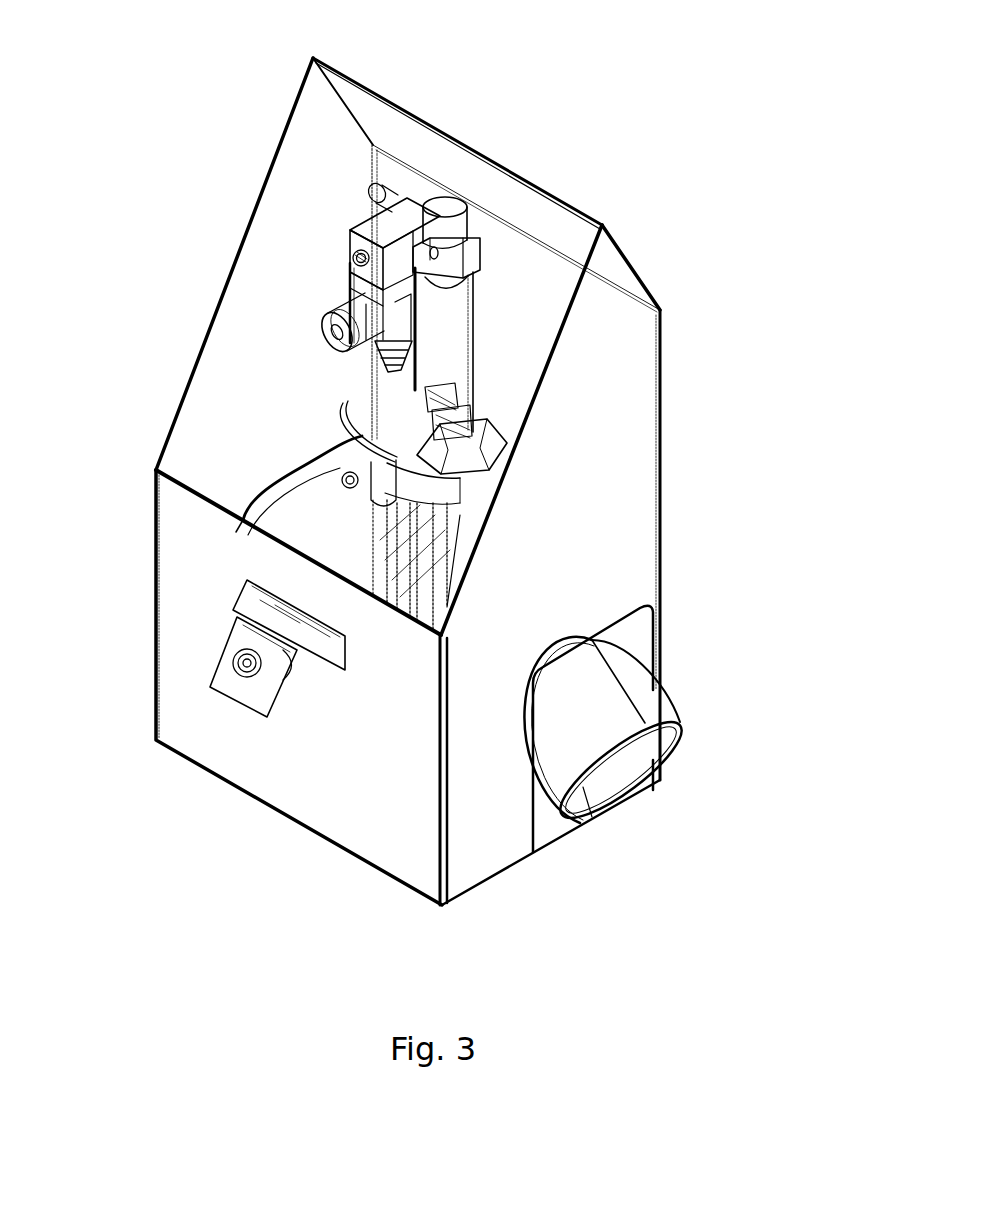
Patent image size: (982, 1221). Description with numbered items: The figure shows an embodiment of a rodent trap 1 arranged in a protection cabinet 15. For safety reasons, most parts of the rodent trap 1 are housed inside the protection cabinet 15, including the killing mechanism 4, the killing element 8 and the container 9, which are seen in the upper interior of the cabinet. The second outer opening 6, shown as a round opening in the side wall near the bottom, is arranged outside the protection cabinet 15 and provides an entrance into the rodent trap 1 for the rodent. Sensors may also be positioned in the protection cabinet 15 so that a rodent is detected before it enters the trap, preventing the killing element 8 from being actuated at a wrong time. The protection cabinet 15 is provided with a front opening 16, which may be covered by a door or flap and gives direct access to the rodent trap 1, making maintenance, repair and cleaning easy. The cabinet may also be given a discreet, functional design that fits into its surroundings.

The rodent trap 1 is at (555, 132).
The killing mechanism 4 is at (393, 227).
The second outer opening 6 is at (623, 764).
The killing element 8 is at (453, 345).
The container 9 is at (383, 354).
The protection cabinet 15 is at (608, 430).
The front opening 16 is at (297, 260).